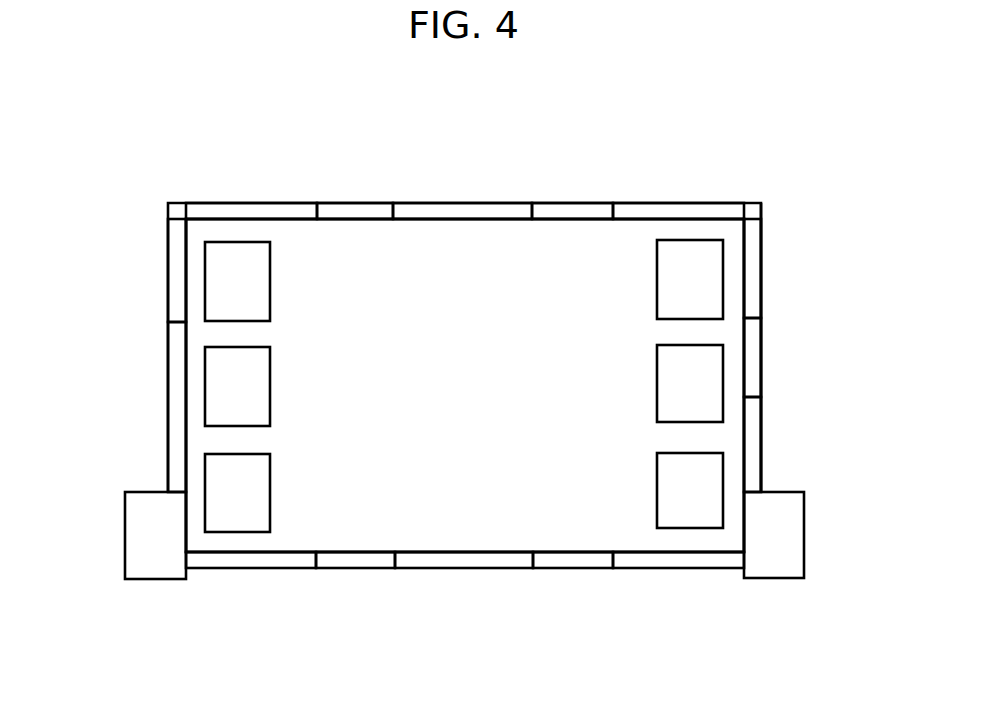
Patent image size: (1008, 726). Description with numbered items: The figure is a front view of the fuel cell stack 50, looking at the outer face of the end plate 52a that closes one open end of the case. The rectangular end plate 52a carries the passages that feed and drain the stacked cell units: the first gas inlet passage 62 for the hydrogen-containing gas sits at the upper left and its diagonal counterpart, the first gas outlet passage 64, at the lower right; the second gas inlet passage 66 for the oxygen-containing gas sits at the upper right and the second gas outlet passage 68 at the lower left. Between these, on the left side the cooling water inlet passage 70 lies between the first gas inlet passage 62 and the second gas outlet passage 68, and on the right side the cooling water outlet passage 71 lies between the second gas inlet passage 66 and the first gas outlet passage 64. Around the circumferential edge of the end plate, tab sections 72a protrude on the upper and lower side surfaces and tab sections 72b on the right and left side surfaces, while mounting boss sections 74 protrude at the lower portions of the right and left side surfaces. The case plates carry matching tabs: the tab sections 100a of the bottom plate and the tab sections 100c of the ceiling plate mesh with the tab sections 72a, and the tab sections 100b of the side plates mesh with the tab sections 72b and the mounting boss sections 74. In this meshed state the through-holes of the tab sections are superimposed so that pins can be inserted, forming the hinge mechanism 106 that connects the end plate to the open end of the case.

The fuel cell stack 50 is at (464, 319).
The hinge mechanism 106 is at (633, 135).
The end plate 52a is at (398, 515).
The first gas inlet passage 62 is at (213, 302).
The first gas outlet passage 64 is at (695, 512).
The second gas inlet passage 66 is at (713, 255).
The second gas outlet passage 68 is at (220, 515).
The cooling water inlet passage 70 is at (213, 403).
The cooling water outlet passage 71 is at (705, 408).
The tab sections 72a is at (345, 206).
The tab sections 72b is at (177, 363).
The mounting boss sections 74 is at (135, 542).
The tab sections 100a is at (270, 570).
The tab sections 100b is at (177, 250).
The tab sections 100c is at (227, 206).